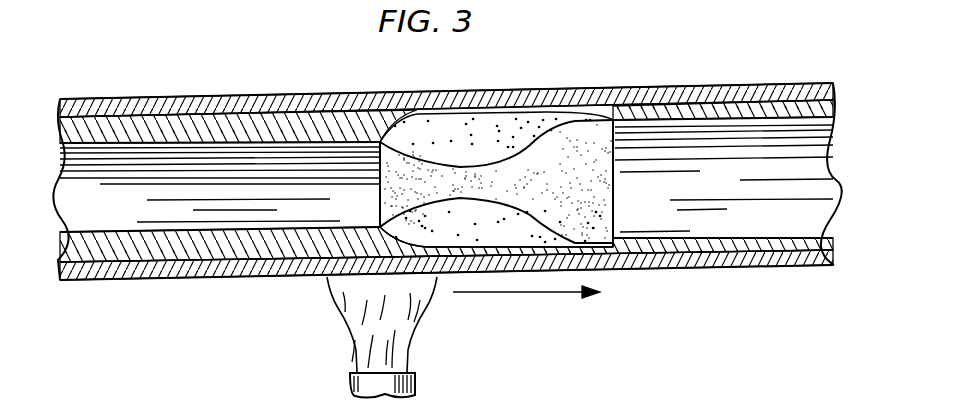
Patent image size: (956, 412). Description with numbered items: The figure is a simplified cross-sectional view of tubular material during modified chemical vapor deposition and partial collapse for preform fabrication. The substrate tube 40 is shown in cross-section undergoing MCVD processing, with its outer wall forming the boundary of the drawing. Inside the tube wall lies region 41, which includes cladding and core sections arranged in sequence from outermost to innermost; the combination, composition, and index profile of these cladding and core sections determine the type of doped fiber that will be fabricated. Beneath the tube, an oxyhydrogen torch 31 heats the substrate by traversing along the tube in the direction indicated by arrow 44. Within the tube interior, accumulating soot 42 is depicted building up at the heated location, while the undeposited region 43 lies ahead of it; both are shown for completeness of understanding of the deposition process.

The oxyhydrogen torch 31 is at (417, 382).
The substrate tube 40 is at (193, 97).
The region including cladding and core sections 41 is at (61, 133).
The accumulating soot 42 is at (510, 133).
The undeposited region 43 is at (695, 145).
The arrow 44 is at (527, 294).